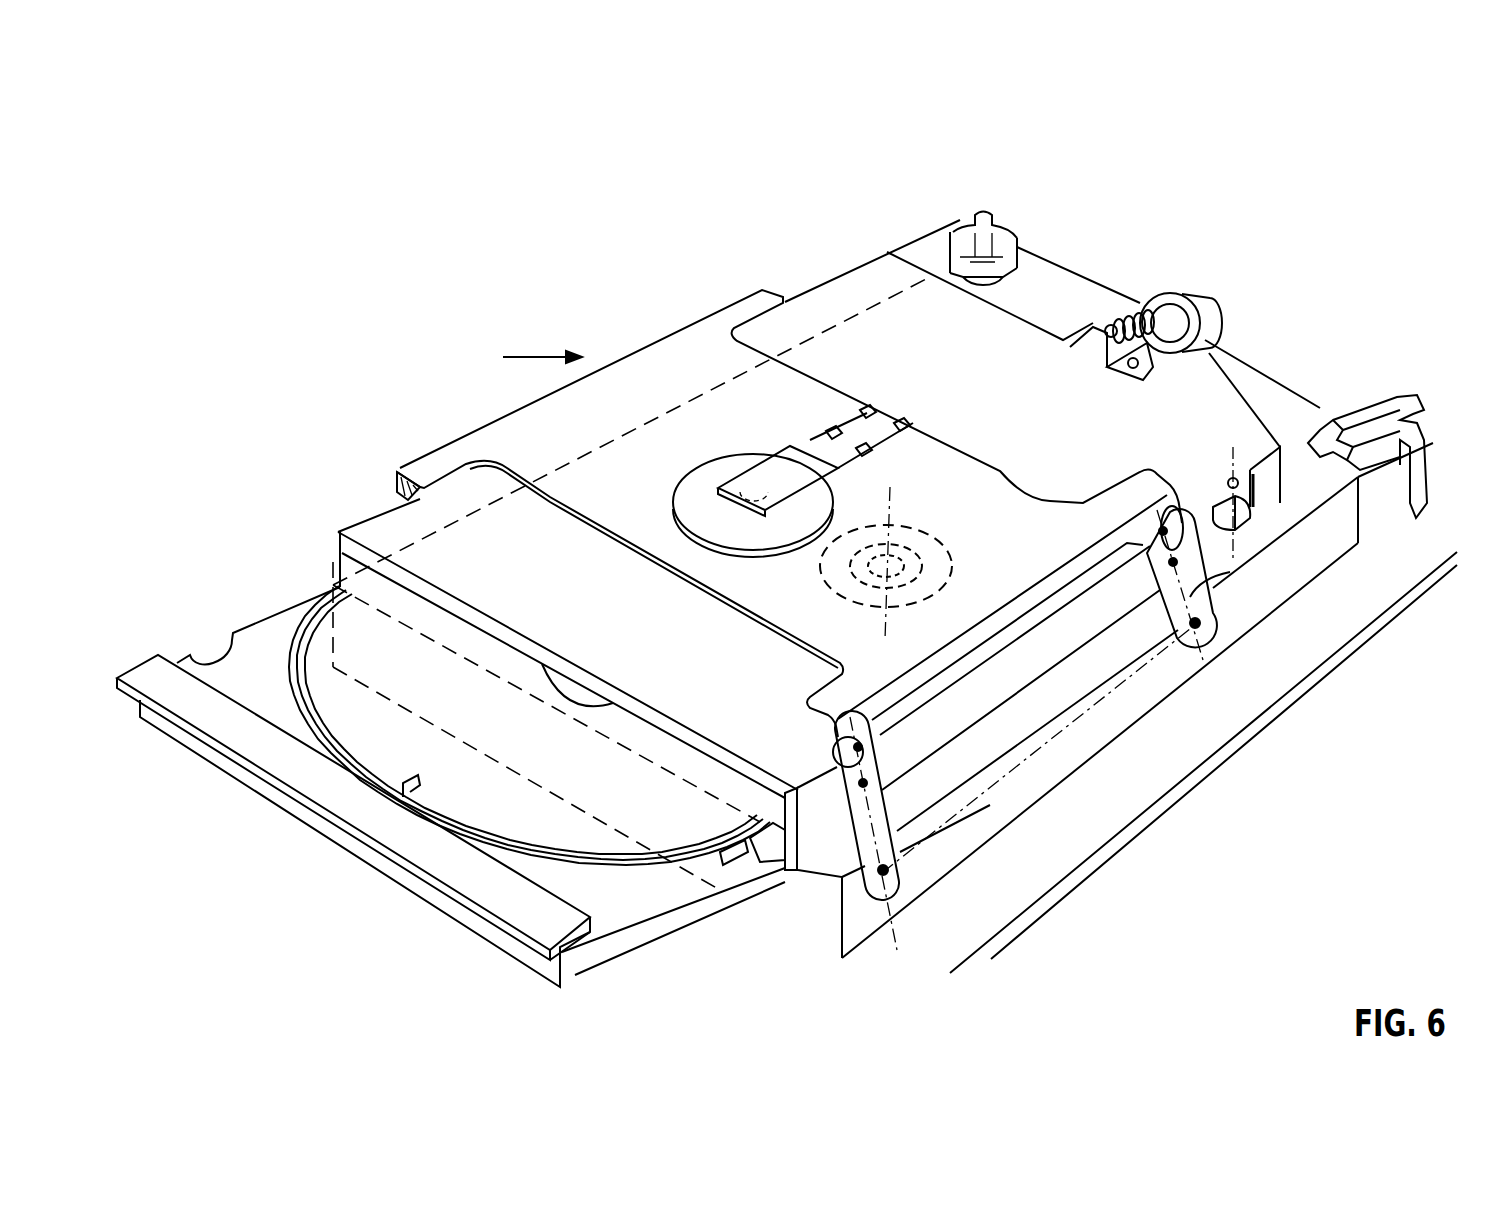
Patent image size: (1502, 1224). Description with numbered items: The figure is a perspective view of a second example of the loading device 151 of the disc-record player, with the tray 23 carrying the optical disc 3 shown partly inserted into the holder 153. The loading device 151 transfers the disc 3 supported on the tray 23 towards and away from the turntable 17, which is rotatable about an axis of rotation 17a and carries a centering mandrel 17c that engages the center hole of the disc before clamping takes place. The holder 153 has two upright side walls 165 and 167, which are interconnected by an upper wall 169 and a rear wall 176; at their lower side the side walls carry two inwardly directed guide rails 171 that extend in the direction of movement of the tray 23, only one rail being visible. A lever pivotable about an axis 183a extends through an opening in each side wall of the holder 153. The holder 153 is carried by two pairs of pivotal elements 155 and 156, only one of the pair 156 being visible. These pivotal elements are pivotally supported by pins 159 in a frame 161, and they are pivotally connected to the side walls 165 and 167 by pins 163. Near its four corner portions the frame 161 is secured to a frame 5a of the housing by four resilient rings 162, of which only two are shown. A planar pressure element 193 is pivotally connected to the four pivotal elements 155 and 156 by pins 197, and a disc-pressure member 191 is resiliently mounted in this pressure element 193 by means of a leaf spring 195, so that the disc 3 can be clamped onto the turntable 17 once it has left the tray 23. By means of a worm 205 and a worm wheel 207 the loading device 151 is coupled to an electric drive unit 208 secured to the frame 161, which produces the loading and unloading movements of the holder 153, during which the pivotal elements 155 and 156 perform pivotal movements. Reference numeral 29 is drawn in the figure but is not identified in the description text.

The optical disc 3 is at (578, 853).
The frame of the housing 5a is at (1378, 622).
The turntable 17 is at (950, 600).
The axis of rotation 17a is at (898, 488).
The centering mandrel 17c is at (950, 546).
The tray 23 is at (600, 955).
The projection 29 is at (740, 868).
The loading device 151 is at (540, 357).
The holder 153 is at (1010, 743).
The pivotal elements 155 is at (397, 483).
The pivotal elements 156 is at (1232, 573).
The pins 159 is at (898, 868).
The frame 161 is at (850, 935).
The resilient rings 162 is at (968, 228).
The pins 163 is at (1165, 600).
The side wall 165 is at (1097, 690).
The side wall 167 is at (338, 561).
The upper wall 169 is at (848, 293).
The guide rails 171 is at (775, 854).
The rear wall 176 is at (1282, 465).
The axis 183a is at (1228, 454).
The disc-pressure member 191 is at (700, 482).
The pressure element 193 is at (697, 340).
The leaf spring 195 is at (782, 468).
The pins 197 is at (833, 751).
The worm 205 is at (1113, 322).
The worm wheel 207 is at (1103, 338).
The electric drive unit 208 is at (1195, 298).